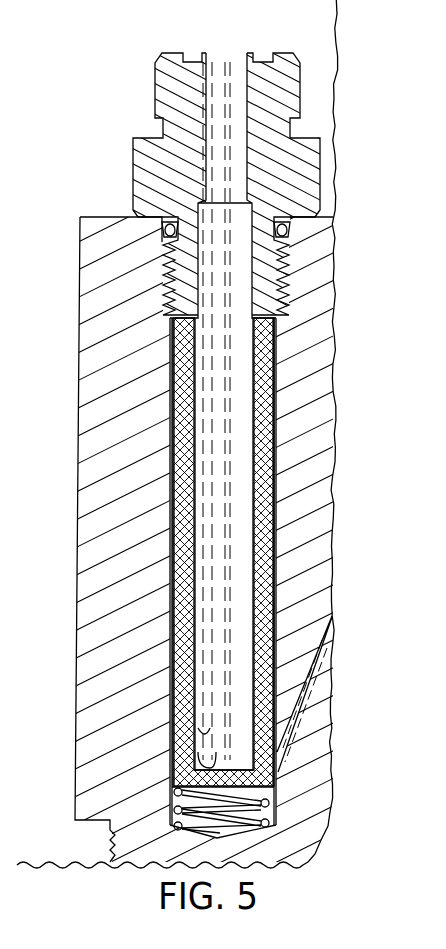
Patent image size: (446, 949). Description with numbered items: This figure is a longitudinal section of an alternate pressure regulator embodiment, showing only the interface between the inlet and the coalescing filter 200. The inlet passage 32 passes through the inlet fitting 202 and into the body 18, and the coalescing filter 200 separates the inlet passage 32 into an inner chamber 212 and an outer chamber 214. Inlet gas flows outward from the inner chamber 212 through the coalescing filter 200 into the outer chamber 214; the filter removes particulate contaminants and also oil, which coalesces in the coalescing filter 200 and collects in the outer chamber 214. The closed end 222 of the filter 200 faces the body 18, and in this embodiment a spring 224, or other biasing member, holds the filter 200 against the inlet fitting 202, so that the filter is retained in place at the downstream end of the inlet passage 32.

The body 18 is at (88, 558).
The inlet fitting 202 is at (143, 167).
The coalescing filter 200 is at (165, 653).
The outer chamber 214 is at (167, 383).
The inlet passage 32 is at (247, 370).
The inner chamber 212 is at (168, 720).
The closed end 222 is at (190, 753).
The spring 224 is at (273, 793).